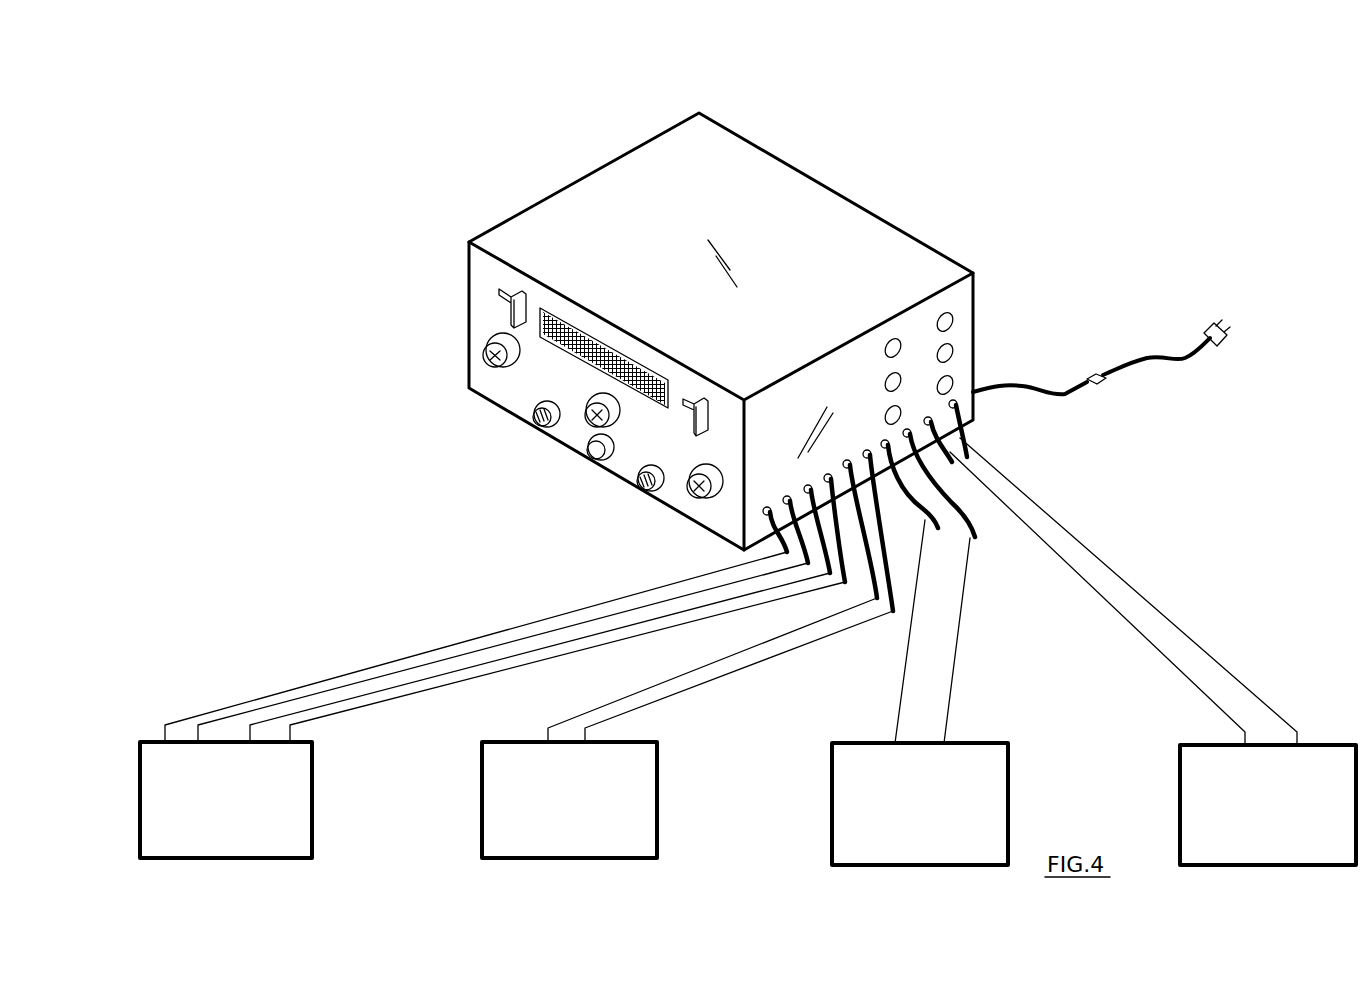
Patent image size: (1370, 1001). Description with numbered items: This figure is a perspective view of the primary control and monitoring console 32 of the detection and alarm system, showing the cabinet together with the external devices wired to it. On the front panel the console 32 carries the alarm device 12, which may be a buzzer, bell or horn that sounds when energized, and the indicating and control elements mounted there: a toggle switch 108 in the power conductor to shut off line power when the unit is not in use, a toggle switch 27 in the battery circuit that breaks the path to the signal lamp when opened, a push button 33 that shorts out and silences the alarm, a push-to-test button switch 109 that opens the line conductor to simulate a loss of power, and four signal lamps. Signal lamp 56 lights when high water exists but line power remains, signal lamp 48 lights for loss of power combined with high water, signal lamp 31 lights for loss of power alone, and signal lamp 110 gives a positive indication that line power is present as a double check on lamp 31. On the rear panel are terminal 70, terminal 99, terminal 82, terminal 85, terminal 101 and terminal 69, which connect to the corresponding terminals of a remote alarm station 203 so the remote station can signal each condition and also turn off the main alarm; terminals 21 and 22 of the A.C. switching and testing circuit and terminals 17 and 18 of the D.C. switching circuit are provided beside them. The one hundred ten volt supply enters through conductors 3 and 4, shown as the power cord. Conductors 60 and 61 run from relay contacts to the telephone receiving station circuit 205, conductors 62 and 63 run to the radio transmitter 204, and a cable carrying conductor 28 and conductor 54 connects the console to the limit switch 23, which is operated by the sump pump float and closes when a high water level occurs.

The control console 32 is at (645, 140).
The alarm device 12 is at (565, 313).
The toggle switch 108 is at (500, 288).
The toggle switch 27 is at (688, 398).
The signal lamp 56 is at (487, 347).
The signal lamp 48 is at (586, 405).
The push button 33 is at (535, 412).
The signal lamp 110 is at (588, 447).
The push-to-test button switch 109 is at (640, 484).
The signal lamp 31 is at (690, 490).
The terminal 70 is at (878, 412).
The terminal 99 is at (895, 340).
The terminal 82 is at (886, 383).
The terminal 85 is at (953, 313).
The terminal 101 is at (947, 350).
The terminal 69 is at (947, 382).
The terminal 21 is at (813, 487).
The terminal 22 is at (830, 478).
The terminal 17 is at (783, 496).
The terminal 18 is at (765, 512).
The conductor 60 is at (806, 620).
The conductor 61 is at (893, 612).
The conductor 62 is at (907, 685).
The conductor 63 is at (952, 685).
The conductor 28 is at (1140, 640).
The limit switch cable conductor 54 is at (1140, 596).
The 110 Volt conductor 3 is at (1087, 377).
The 110 Volt conductor 4 is at (1106, 380).
The remote alarm station 203 is at (226, 815).
The telephone receiving station circuit 205 is at (569, 816).
The radio transmitter 204 is at (920, 817).
The limit switch 23 is at (1268, 819).